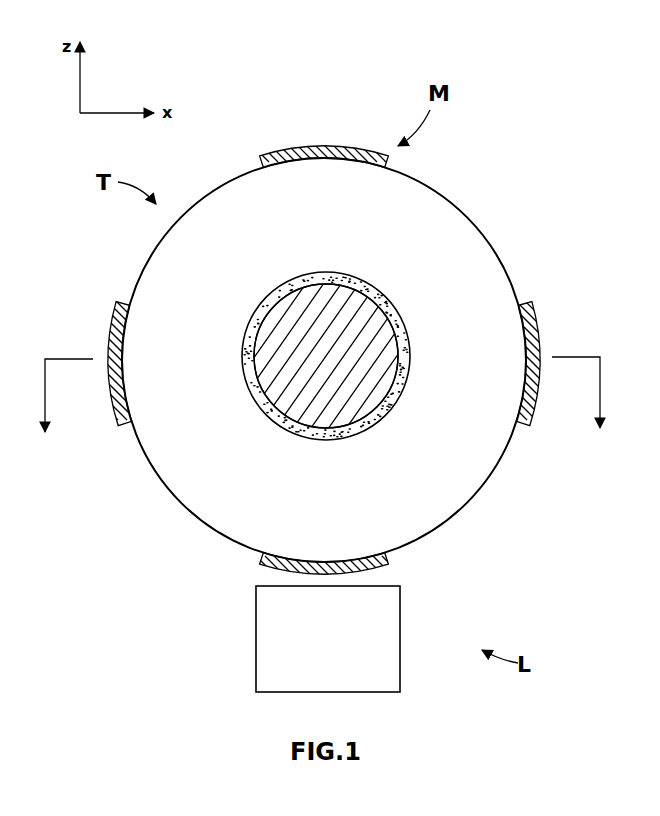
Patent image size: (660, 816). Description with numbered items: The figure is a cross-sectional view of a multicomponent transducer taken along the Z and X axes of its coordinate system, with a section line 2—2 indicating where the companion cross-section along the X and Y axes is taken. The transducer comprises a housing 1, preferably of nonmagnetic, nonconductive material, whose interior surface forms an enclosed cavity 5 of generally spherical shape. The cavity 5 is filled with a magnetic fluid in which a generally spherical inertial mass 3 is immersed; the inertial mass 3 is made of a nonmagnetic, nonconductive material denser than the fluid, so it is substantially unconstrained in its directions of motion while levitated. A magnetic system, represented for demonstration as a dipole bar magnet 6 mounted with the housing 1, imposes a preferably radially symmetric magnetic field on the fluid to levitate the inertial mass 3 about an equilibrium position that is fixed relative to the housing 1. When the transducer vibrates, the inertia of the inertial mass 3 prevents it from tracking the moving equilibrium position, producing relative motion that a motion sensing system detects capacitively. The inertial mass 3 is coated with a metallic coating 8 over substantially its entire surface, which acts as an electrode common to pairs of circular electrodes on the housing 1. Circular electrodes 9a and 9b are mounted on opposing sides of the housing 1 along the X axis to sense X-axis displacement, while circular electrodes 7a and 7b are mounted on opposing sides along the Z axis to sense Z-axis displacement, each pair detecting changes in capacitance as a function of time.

The housing 1 is at (470, 216).
The section line 2— 2 is at (322, 414).
The inertial mass 3 is at (396, 380).
The cavity 5 is at (456, 298).
The dipole bar magnet 6 is at (400, 618).
The circular electrode 7a is at (318, 148).
The circular electrode 7b is at (388, 553).
The metallic coating 8 is at (274, 293).
The circular electrode 9a is at (110, 322).
The circular electrode 9b is at (540, 313).